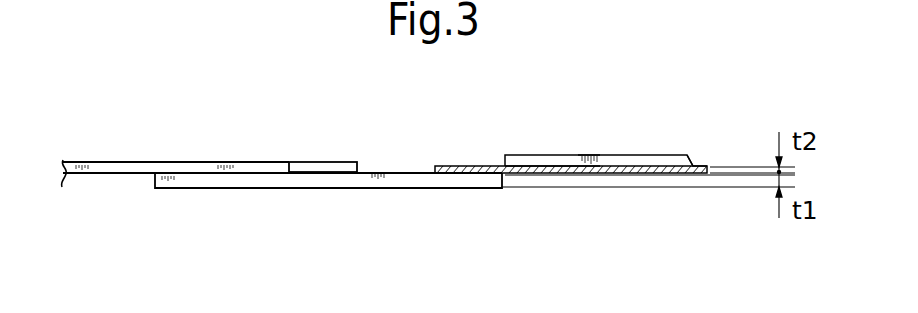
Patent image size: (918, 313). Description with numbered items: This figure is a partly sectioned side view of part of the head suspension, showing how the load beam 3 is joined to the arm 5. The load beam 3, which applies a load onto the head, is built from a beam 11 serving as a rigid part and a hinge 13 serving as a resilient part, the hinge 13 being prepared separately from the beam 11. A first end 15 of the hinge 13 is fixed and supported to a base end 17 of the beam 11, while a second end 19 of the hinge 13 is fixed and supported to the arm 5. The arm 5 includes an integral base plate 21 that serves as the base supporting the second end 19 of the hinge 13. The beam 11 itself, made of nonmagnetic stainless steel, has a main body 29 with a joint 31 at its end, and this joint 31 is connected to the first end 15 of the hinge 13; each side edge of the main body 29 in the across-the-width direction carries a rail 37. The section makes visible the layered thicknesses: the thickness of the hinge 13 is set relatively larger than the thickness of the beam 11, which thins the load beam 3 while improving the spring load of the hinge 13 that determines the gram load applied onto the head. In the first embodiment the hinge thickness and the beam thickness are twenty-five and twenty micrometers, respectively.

The load beam 3 is at (633, 154).
The arm 5 is at (105, 162).
The beam 11 is at (697, 166).
The hinge 13 is at (383, 188).
The first end 15 is at (458, 188).
The base end 17 is at (515, 187).
The second end 19 is at (238, 188).
The base plate 21 is at (276, 162).
The main body 29 is at (550, 165).
The joint 31 is at (465, 165).
The rail 37 is at (588, 154).